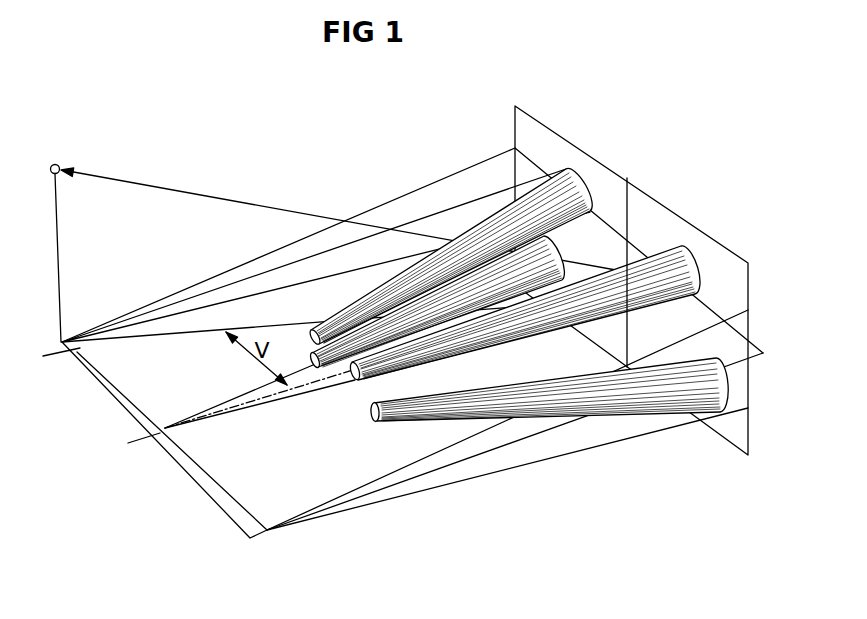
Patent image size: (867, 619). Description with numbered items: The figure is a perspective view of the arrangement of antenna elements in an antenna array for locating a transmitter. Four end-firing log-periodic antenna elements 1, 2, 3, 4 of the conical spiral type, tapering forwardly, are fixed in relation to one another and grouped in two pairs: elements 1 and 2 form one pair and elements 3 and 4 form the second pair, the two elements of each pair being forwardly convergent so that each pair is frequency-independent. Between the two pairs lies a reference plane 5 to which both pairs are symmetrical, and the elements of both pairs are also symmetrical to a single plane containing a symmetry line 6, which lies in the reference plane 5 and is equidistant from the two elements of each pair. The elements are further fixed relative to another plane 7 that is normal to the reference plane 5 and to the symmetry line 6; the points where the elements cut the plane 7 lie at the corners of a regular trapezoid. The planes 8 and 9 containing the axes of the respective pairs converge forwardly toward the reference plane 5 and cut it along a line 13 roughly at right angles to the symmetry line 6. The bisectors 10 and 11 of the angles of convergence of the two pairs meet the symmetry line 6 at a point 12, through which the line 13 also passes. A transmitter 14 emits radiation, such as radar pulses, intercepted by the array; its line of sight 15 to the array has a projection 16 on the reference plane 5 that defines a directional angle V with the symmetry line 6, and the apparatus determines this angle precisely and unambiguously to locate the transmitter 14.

The antenna element 1 is at (696, 258).
The antenna element 2 is at (573, 180).
The antenna element 3 is at (645, 420).
The antenna element 4 is at (568, 247).
The reference plane 5 is at (507, 435).
The symmetry line 6 is at (255, 398).
The plane 7 is at (650, 196).
The plane 8 is at (392, 453).
The plane 9 is at (460, 473).
The bisector 10 is at (238, 397).
The bisector 11 is at (303, 400).
The point 12 is at (163, 434).
The line 13 is at (203, 486).
The transmitter 14 is at (56, 163).
The line of sight 15 is at (267, 208).
The projection 16 is at (194, 333).